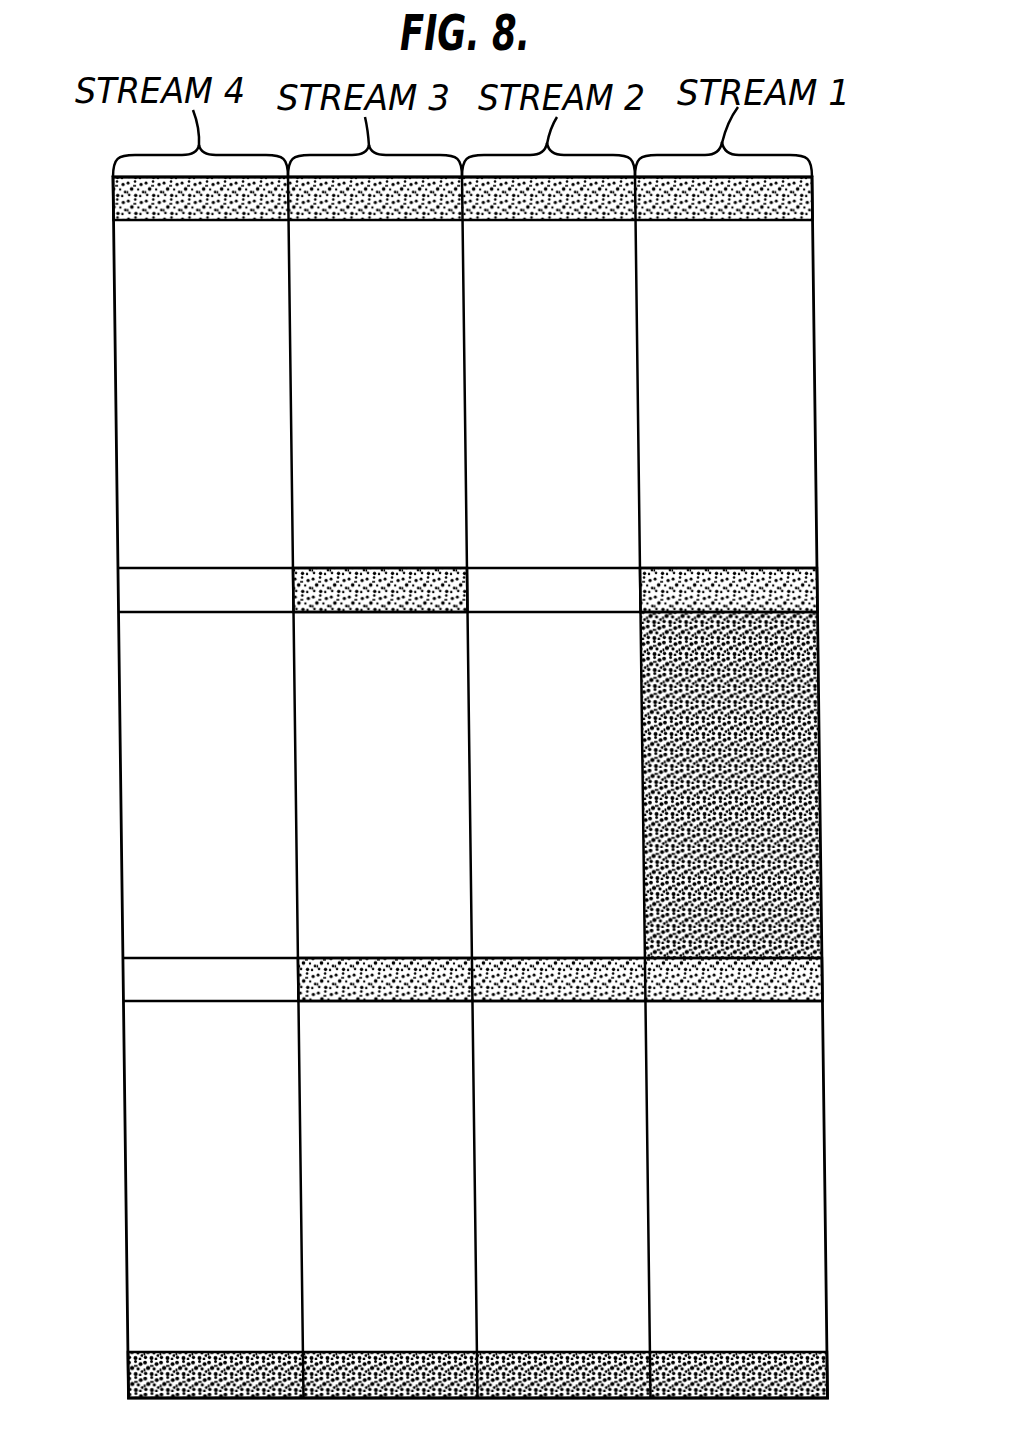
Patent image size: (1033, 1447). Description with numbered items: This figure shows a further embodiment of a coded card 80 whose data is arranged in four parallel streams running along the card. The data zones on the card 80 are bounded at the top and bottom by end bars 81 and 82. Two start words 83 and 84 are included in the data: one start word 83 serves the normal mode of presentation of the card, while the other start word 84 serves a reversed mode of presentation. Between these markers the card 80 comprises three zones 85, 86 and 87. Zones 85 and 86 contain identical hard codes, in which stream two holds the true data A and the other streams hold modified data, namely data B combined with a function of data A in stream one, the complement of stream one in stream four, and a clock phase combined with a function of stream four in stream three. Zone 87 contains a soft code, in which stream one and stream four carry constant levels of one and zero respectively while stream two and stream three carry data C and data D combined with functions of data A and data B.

The coded card 80 is at (812, 386).
The end bar 81 is at (813, 195).
The end bar 82 is at (829, 1370).
The start word 83 is at (817, 585).
The start word 84 is at (822, 982).
The zone 85 is at (135, 360).
The zone 86 is at (160, 1178).
The zone 87 is at (140, 776).